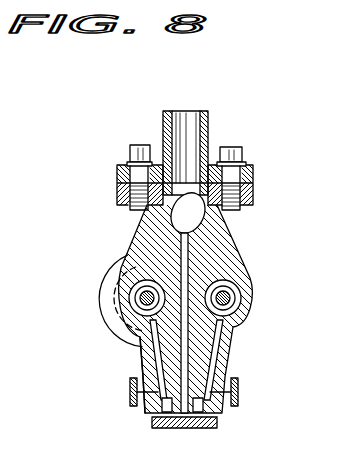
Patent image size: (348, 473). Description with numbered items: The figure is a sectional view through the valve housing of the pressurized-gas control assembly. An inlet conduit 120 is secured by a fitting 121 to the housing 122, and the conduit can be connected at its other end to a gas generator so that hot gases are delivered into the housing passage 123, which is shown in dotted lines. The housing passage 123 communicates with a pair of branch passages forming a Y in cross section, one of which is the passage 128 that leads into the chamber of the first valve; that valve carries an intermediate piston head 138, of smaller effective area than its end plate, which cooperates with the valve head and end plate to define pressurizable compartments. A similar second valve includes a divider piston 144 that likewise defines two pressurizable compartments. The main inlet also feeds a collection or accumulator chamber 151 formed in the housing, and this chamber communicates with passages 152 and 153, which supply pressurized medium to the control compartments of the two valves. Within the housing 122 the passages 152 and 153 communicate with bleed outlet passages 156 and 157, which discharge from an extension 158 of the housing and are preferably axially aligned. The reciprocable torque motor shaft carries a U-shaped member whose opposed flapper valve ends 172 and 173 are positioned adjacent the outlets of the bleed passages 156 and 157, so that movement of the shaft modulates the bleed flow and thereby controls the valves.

The inlet conduit 120 is at (190, 138).
The fitting 121 is at (117, 171).
The housing 122 is at (221, 258).
The housing passage 123 is at (248, 205).
The passage 128 is at (140, 241).
The intermediate piston head 138 is at (133, 293).
The divider piston 144 is at (232, 293).
The accumulator chamber 151 is at (172, 426).
The passage 152 is at (152, 343).
The passage 153 is at (212, 351).
The bleed outlet passage 156 is at (158, 402).
The bleed outlet passage 157 is at (220, 404).
The extension 158 is at (143, 362).
The flapper valve end 172 is at (130, 391).
The flapper valve end 173 is at (238, 392).